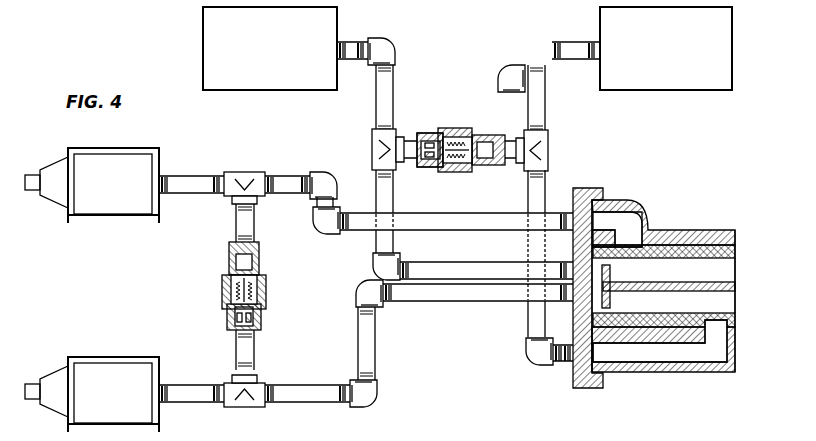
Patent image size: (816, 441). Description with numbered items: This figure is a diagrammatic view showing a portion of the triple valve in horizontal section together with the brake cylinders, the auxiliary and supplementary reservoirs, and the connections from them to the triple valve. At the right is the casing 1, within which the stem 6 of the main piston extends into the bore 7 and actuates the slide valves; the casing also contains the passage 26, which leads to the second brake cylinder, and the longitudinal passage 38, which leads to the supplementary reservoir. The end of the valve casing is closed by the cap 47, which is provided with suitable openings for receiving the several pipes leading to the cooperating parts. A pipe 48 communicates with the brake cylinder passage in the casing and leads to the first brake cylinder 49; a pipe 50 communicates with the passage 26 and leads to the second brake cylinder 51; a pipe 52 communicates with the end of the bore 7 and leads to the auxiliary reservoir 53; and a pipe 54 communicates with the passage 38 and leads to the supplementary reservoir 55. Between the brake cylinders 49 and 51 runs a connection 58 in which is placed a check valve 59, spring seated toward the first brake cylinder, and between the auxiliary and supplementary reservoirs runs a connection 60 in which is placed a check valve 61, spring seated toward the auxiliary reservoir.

The casing 1 is at (690, 235).
The stem 6 is at (650, 289).
The bore 7 is at (717, 285).
The passage 26 is at (617, 229).
The longitudinal passage 38 is at (668, 362).
The cap 47 is at (576, 196).
The pipe 48 is at (465, 301).
The brake cylinder No. 1 49 is at (92, 394).
The pipe 50 is at (457, 226).
The brake cylinder No. 2 51 is at (92, 185).
The pipe 52 is at (460, 270).
The auxiliary reservoir 53 is at (270, 48).
The pipe 54 is at (532, 324).
The supplementary reservoir 55 is at (666, 48).
The connection 58 is at (250, 230).
The check valve 59 is at (256, 290).
The connection 60 is at (413, 132).
The check valve 61 is at (452, 130).